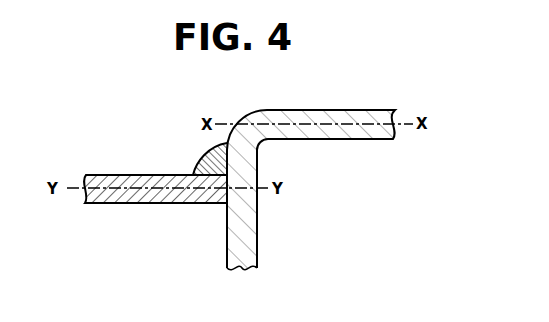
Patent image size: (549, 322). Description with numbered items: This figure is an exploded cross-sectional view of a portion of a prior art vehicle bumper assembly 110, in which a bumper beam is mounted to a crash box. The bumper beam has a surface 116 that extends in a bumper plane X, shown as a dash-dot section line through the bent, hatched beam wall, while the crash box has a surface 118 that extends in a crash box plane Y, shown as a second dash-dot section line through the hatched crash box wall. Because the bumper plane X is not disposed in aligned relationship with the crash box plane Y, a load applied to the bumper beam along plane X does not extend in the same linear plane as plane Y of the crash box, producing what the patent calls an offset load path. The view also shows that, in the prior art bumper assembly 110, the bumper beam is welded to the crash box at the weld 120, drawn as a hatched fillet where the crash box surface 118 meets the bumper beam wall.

The vehicle bumper assembly 110 is at (232, 168).
The surface 116 is at (362, 110).
The surface 118 is at (138, 175).
The weld 120 is at (203, 162).